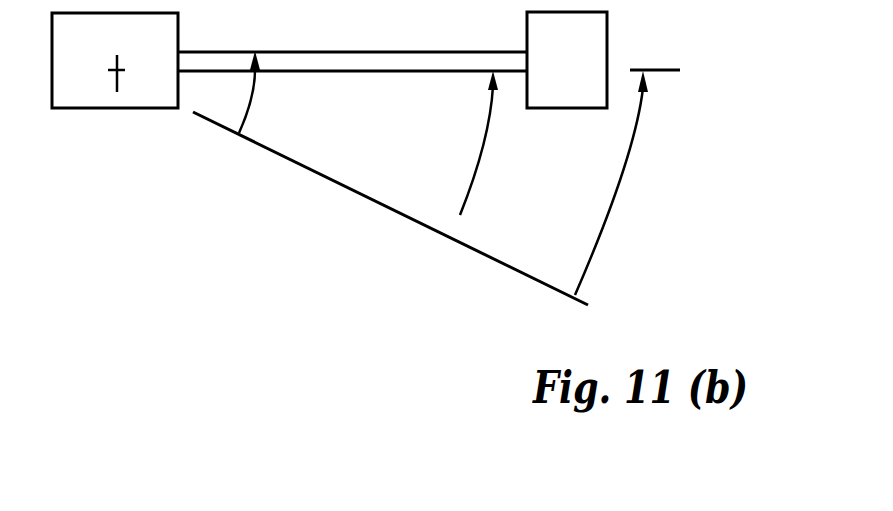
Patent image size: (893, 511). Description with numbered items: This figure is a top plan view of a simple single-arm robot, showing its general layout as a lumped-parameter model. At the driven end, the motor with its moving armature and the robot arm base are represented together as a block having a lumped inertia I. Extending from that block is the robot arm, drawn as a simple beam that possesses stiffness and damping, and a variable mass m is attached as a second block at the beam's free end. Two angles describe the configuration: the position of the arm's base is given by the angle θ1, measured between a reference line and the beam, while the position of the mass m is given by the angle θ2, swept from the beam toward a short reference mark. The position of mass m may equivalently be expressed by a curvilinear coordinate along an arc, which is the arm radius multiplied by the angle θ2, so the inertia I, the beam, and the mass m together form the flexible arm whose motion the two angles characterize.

The lumped inertia I is at (77, 60).
The variable mass m is at (567, 60).
The angle θ 1 is at (271, 94).
The angle θ 2 is at (466, 143).